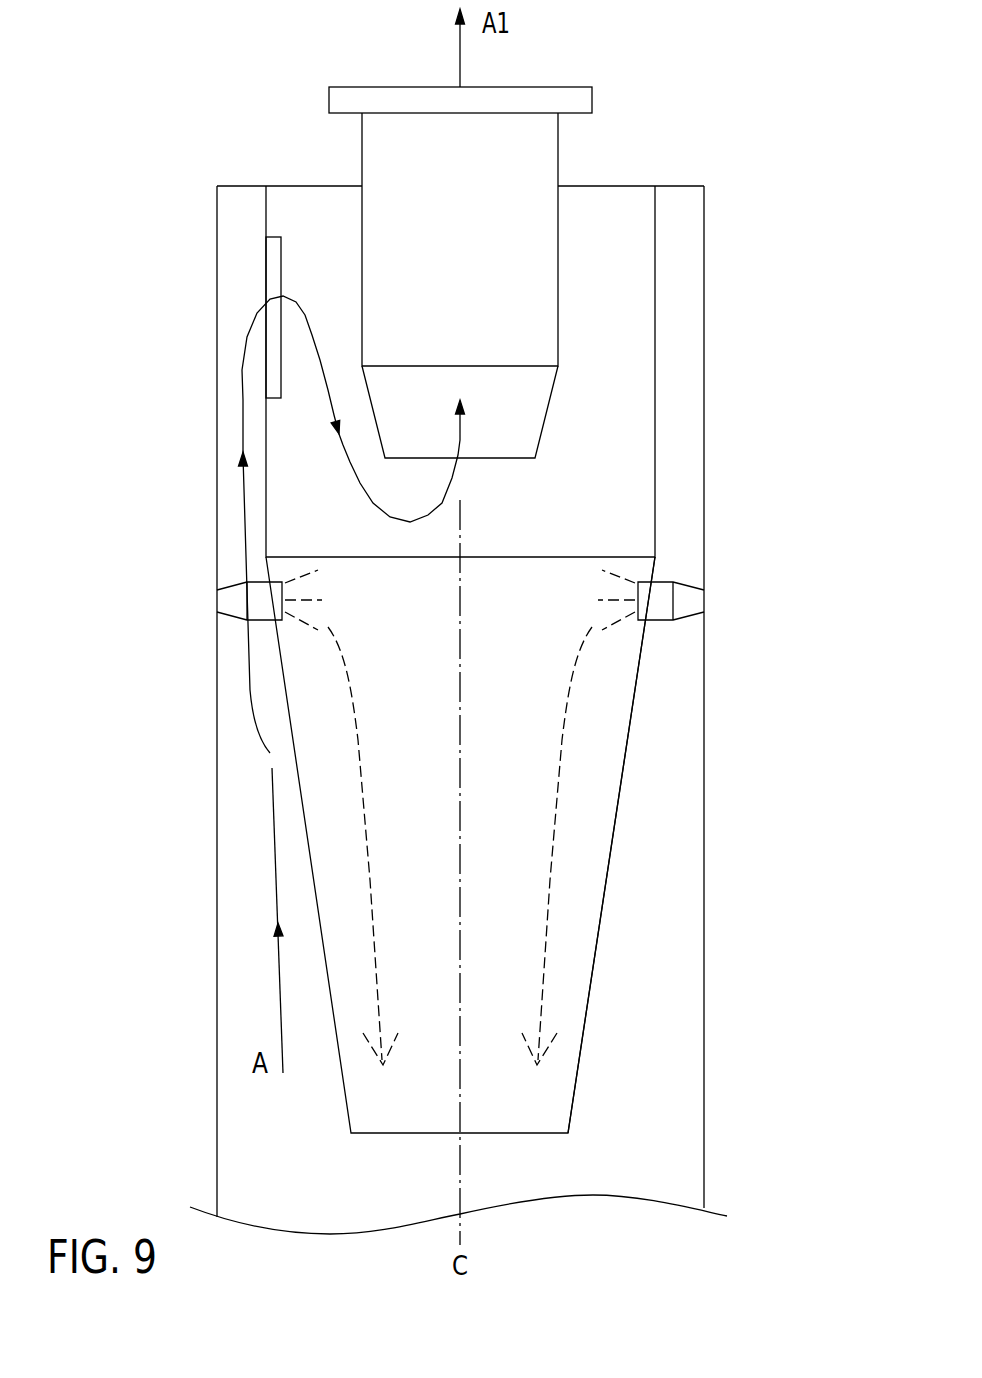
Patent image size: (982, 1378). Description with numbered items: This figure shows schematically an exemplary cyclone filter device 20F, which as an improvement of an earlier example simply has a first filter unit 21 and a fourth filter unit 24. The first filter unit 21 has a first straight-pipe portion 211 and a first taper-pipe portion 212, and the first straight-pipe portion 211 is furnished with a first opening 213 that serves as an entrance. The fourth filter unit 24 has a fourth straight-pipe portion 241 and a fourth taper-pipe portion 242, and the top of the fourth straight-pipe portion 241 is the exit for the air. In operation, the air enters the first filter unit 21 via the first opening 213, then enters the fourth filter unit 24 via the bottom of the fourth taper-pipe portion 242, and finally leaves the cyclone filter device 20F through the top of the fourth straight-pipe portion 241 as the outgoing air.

The first filter unit 21 is at (128, 778).
The first straight-pipe portion 211 is at (273, 478).
The first taper-pipe portion 212 is at (303, 750).
The first opening 213 is at (272, 273).
The fourth filter unit 24 is at (774, 245).
The fourth straight-pipe portion 241 is at (538, 278).
The fourth taper-pipe portion 242 is at (535, 410).
The cyclone filter device 20F is at (625, 752).